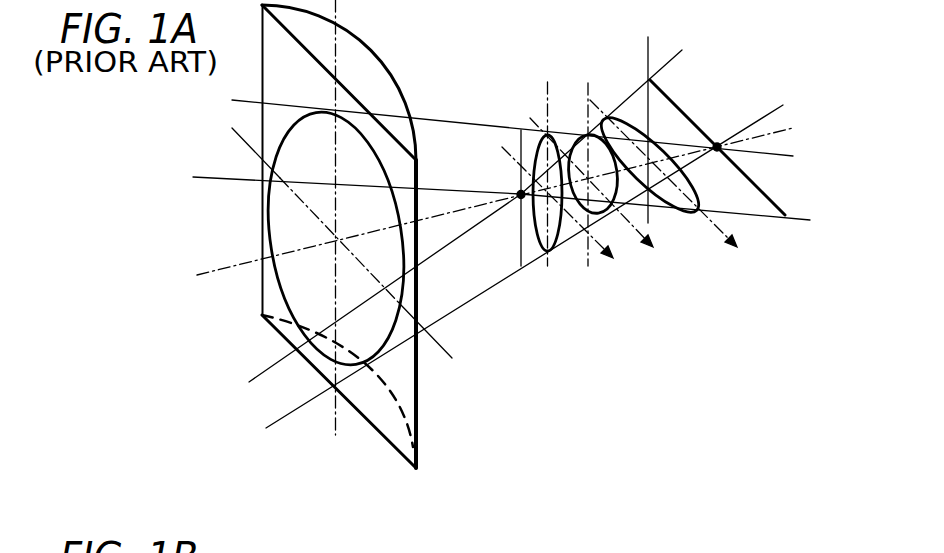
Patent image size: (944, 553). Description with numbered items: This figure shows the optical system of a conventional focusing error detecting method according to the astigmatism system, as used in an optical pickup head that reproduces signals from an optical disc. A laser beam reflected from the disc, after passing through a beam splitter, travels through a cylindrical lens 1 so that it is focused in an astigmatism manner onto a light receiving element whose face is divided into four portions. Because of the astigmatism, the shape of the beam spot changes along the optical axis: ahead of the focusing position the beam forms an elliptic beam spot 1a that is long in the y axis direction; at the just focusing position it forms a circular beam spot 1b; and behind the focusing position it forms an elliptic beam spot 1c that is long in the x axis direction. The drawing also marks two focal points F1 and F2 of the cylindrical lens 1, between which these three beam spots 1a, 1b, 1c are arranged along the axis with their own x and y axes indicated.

The cylindrical lens 1 is at (366, 89).
The elliptic beam spot 1a is at (560, 229).
The circular beam spot 1b is at (606, 210).
The elliptic beam spot 1c is at (673, 209).
The focal point F1 is at (716, 143).
The focal point F2 is at (519, 192).